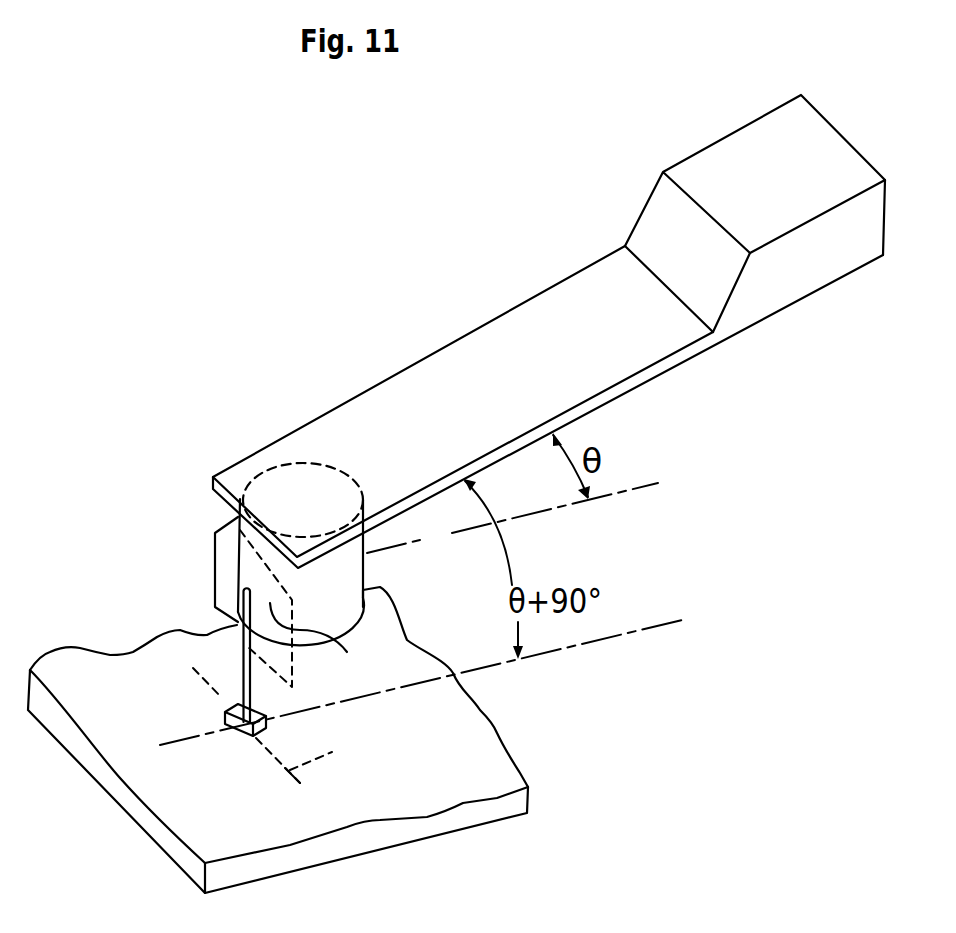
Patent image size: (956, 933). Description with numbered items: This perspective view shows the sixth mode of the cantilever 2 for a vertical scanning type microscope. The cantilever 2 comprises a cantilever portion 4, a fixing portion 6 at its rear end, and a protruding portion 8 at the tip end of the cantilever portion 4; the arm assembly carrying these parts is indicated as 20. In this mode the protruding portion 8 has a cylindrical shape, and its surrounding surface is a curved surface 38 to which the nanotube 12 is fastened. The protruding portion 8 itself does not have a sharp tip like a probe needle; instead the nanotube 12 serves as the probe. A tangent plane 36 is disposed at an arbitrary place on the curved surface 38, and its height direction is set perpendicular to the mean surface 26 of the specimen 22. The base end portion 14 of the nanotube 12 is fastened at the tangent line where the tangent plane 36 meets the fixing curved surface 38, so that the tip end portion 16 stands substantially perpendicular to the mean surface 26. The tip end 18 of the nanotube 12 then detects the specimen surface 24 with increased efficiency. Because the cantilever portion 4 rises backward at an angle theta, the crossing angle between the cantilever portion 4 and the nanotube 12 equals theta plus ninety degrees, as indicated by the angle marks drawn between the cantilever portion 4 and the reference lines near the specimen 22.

The cantilever 2 is at (405, 362).
The arm 20 is at (470, 270).
The cantilever portion 4 is at (595, 378).
The fixing portion 6 is at (780, 217).
The protruding portion 8 is at (343, 567).
The nanotube 12 is at (222, 647).
The base end portion 14 is at (238, 598).
The tip end portion 16 is at (236, 704).
The tip end 18 is at (240, 723).
The specimen 22 is at (413, 827).
The specimen surface 24 is at (297, 820).
The mean surface 26 is at (320, 707).
The tangent plane 36 is at (217, 533).
The curved surface 38 is at (317, 577).